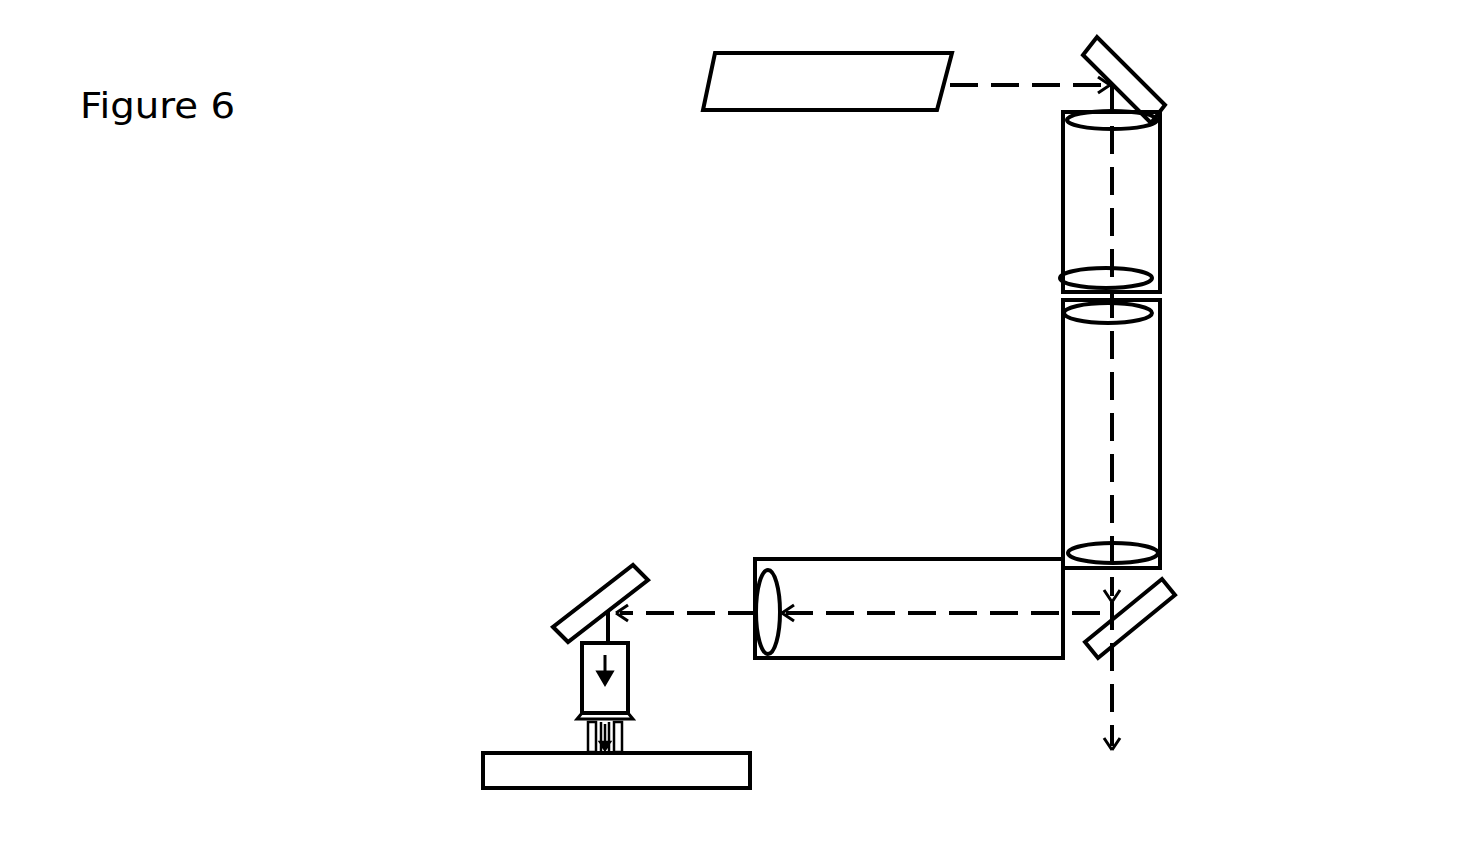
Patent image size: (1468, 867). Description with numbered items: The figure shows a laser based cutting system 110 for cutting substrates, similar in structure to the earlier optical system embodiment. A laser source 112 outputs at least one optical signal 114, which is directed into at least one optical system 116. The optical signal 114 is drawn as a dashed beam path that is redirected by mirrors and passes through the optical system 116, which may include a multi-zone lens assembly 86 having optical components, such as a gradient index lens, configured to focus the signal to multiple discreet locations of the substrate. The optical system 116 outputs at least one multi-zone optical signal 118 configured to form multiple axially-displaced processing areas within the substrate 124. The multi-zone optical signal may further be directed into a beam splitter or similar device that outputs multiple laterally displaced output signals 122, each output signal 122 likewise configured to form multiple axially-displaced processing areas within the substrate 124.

The laser based cutting system 110 is at (1246, 123).
The laser source 112 is at (875, 108).
The optical signal 114 is at (1028, 77).
The optical system 116 is at (1065, 207).
The multi-zone lens assembly 86 is at (1065, 400).
The multi-zone optical signal 118 is at (775, 565).
The output signal 122 is at (629, 610).
The substrate 124 is at (555, 765).